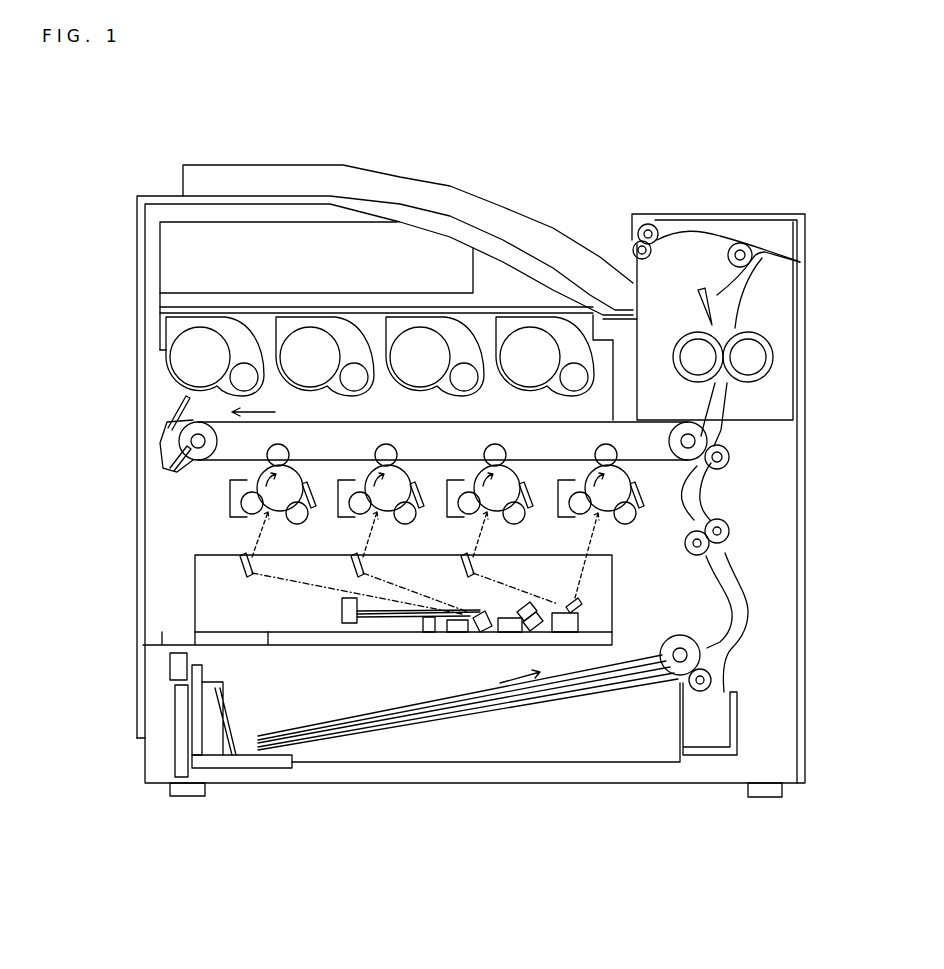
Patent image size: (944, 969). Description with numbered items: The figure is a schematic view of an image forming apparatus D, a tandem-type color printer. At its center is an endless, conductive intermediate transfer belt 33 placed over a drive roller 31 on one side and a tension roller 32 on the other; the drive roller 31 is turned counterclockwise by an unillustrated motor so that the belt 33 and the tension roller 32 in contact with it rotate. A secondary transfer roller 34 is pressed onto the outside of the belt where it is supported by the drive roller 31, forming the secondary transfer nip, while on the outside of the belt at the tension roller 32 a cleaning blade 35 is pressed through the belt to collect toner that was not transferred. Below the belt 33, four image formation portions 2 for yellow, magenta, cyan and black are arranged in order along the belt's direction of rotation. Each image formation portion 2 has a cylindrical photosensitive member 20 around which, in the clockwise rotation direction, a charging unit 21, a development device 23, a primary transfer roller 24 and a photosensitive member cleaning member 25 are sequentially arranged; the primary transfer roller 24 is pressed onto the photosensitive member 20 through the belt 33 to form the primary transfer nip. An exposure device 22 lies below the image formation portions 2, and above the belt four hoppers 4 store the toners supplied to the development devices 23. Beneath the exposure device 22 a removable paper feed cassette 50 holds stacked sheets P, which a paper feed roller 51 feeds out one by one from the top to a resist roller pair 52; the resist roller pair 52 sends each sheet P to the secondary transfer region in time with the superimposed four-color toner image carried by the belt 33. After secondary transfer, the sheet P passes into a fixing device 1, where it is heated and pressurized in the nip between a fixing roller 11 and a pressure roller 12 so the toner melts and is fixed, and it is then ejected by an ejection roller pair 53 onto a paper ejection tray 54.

The image forming apparatus D is at (784, 175).
The paper ejection tray 54 is at (494, 192).
The ejection roller pair 53 is at (653, 222).
The fixing device 1 is at (748, 338).
The fixing roller 11 is at (690, 335).
The pressure roller 12 is at (752, 358).
The hoppers 4 is at (205, 328).
The image formation portions 2 is at (411, 475).
The photosensitive member 20 is at (289, 497).
The charging unit 21 is at (303, 517).
The exposure device 22 is at (212, 586).
The development device 23 is at (238, 506).
The primary transfer roller 24 is at (270, 452).
The photosensitive member cleaning member 25 is at (313, 490).
The drive roller 31 is at (705, 441).
The tension roller 32 is at (172, 418).
The intermediate transfer belt 33 is at (232, 467).
The secondary transfer roller 34 is at (725, 457).
The cleaning blade 35 is at (163, 460).
The paper feed cassette 50 is at (490, 740).
The paper feed roller 51 is at (668, 640).
The resist roller pair 52 is at (740, 548).
The sheet P is at (411, 700).